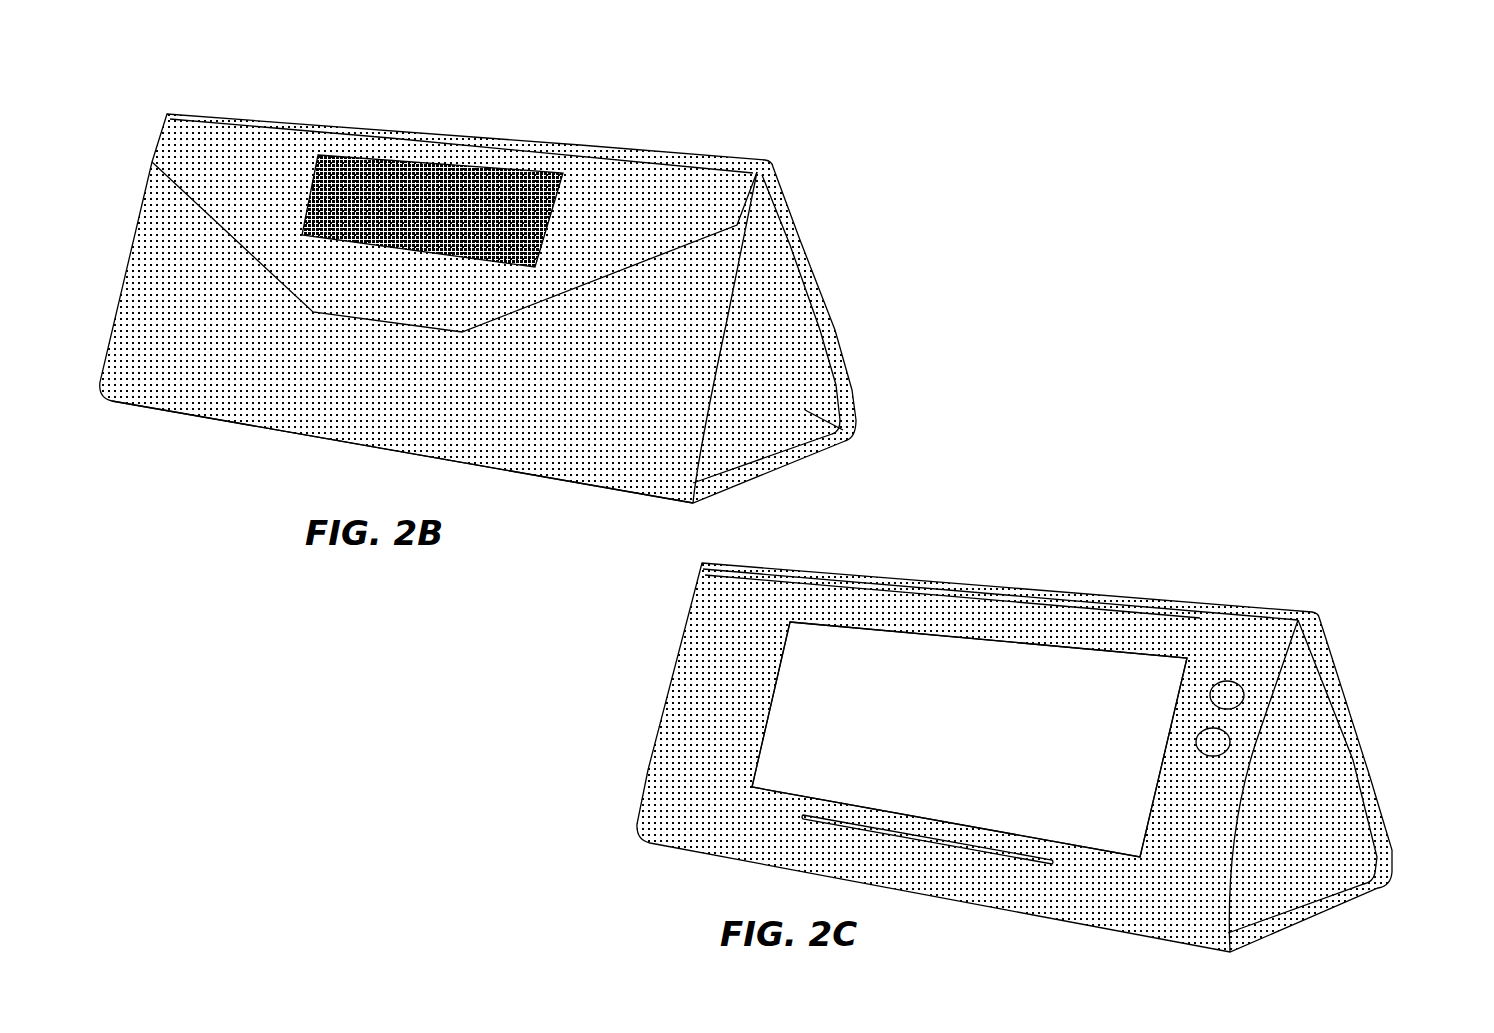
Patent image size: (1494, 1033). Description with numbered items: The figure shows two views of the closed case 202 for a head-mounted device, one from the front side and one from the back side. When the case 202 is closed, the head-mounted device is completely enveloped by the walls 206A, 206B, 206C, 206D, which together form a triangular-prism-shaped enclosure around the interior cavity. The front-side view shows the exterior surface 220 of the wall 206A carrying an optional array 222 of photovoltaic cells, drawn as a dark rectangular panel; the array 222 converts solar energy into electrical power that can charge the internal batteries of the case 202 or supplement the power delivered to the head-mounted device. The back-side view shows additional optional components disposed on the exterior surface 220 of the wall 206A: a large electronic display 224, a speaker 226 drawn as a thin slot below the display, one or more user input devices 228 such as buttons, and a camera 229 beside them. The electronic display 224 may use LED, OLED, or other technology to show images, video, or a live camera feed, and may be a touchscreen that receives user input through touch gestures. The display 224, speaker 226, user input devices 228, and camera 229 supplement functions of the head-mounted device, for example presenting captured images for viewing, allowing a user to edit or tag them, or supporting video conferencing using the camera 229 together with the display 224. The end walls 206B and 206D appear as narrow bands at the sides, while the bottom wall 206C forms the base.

In FIG. 2B, the case 202 is at (748, 123).
In FIG. 2C, the case 202 is at (1160, 578).
In FIG. 2B, the wall 206A is at (275, 163).
In FIG. 2C, the wall 206A is at (702, 675).
In FIG. 2C, the wall 206B is at (1315, 865).
In FIG. 2B, the wall 206C is at (613, 452).
In FIG. 2B, the wall 206D is at (848, 438).
In FIG. 2B, the exterior surface 220 is at (644, 231).
In FIG. 2C, the exterior surface 220 is at (725, 758).
In FIG. 2B, the array of photovoltaic cells 222 is at (485, 192).
In FIG. 2C, the electronic display 224 is at (979, 738).
In FIG. 2C, the speaker 226 is at (893, 837).
In FIG. 2C, the user input devices 228 is at (1228, 692).
In FIG. 2C, the camera 229 is at (1227, 742).